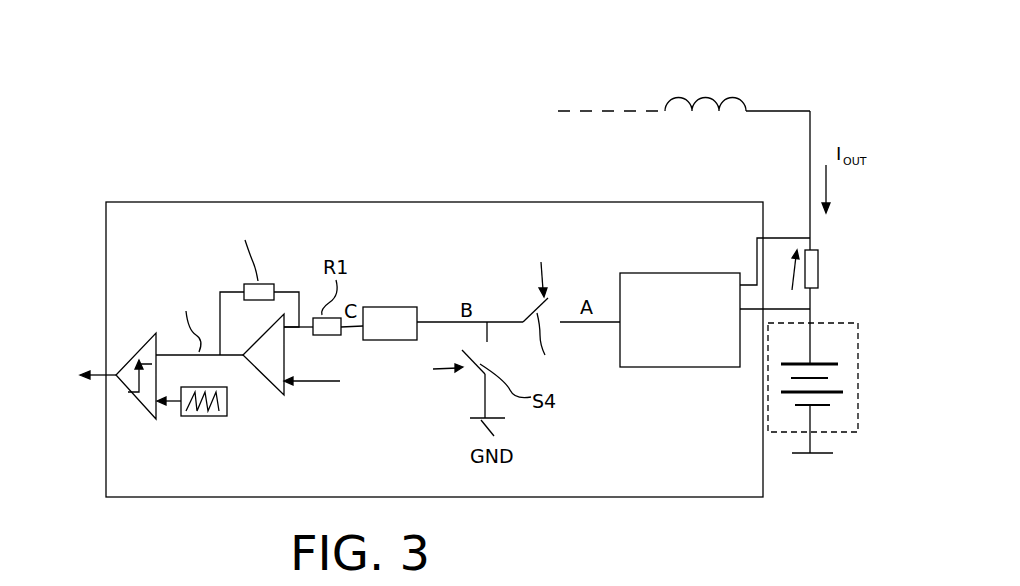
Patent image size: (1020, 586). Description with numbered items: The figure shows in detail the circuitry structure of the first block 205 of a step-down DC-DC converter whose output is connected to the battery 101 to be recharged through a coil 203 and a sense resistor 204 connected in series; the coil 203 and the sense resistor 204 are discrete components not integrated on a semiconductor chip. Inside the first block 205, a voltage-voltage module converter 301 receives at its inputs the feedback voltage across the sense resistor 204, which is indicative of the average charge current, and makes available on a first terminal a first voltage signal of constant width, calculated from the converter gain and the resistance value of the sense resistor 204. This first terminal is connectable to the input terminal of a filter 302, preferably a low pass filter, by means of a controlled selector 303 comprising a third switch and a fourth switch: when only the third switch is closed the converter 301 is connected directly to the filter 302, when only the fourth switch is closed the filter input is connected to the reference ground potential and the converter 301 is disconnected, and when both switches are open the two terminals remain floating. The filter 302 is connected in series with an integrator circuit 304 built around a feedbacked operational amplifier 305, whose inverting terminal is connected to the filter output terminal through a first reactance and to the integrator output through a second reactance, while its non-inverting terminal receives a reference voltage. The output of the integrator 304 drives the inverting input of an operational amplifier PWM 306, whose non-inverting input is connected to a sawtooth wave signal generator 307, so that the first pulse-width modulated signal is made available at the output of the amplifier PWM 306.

The battery 101 is at (834, 325).
The coil 203 is at (700, 98).
The sense resistor 204 is at (818, 270).
The first block 205 is at (610, 474).
The voltage-voltage module converter 301 is at (692, 368).
The filter 302 is at (387, 305).
The controlled selector 303 is at (504, 301).
The integrator circuit 304 is at (283, 243).
The operational amplifier 305 is at (284, 391).
The operational amplifier PWM 306 is at (148, 275).
The sawtooth wave signal generator 307 is at (208, 417).